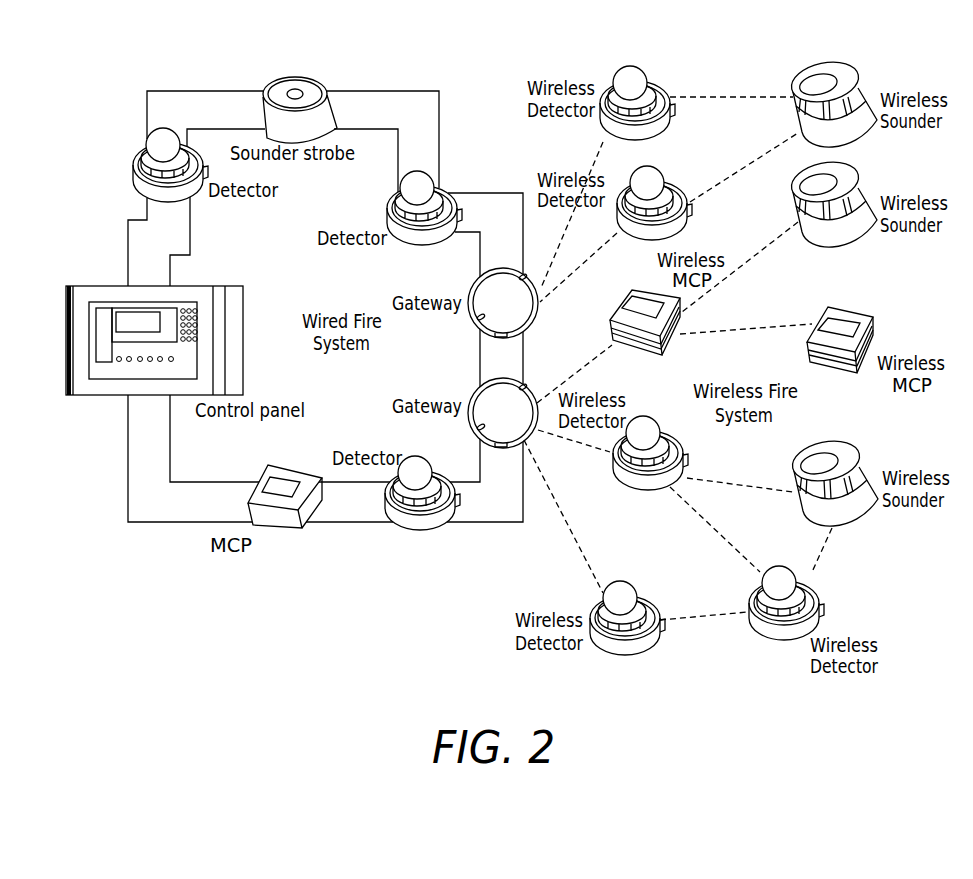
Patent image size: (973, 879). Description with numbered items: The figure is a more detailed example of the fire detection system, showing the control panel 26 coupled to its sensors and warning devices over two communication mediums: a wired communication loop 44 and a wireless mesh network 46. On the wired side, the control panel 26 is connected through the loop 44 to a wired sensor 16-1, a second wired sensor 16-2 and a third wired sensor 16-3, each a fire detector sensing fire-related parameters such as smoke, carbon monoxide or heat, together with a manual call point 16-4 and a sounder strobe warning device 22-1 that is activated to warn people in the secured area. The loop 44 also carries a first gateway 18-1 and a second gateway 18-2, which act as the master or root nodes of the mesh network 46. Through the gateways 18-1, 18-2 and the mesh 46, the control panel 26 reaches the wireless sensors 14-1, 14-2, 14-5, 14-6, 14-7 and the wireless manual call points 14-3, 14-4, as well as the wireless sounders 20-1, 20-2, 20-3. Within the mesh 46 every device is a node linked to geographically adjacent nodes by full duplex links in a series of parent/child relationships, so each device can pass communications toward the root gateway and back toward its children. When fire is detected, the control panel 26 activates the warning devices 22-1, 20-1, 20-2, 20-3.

The wireless sensor 14-1 is at (658, 81).
The wireless sensor 14-2 is at (668, 182).
The wireless manual call point 14-3 is at (661, 355).
The wireless manual call point 14-4 is at (864, 312).
The wireless sensor 14-5 is at (647, 492).
The wireless sensor 14-6 is at (820, 598).
The wireless sensor 14-7 is at (633, 656).
The wired sensor 16-1 is at (140, 155).
The wired sensor 16-2 is at (444, 183).
The wired sensor 16-3 is at (416, 534).
The wired manual call point 16-4 is at (298, 534).
The gateway 18-1 is at (476, 283).
The gateway 18-2 is at (476, 393).
The wireless warning device 20-1 is at (853, 455).
The wireless warning device 20-2 is at (838, 63).
The wireless warning device 20-3 is at (852, 176).
The wired warning device 22-1 is at (301, 75).
The central monitoring station 26 is at (228, 286).
The wired communication loop 44 is at (342, 307).
The mesh network 46 is at (748, 428).